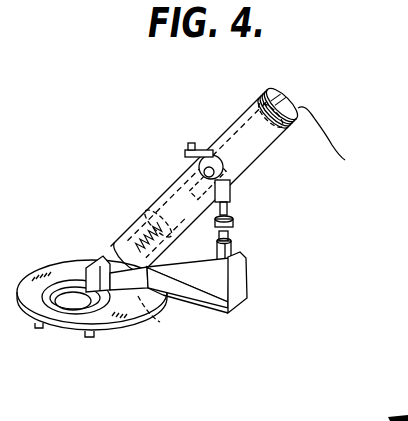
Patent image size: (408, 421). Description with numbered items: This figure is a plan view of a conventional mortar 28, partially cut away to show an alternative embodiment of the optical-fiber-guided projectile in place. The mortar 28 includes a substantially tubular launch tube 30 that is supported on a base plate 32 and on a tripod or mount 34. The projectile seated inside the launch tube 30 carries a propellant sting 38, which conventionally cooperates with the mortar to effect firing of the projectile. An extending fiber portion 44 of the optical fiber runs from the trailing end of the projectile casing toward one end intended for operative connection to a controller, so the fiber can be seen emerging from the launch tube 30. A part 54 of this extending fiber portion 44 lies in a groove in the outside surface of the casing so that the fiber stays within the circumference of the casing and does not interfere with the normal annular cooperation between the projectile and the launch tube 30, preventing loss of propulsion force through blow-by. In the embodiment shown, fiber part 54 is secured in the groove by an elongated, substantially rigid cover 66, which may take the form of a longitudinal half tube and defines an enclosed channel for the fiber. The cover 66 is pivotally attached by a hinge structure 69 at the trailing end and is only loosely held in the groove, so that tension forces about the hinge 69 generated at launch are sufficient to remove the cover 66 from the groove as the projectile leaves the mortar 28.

The mortar 28 is at (161, 195).
The launch tube 30 is at (245, 111).
The cover 66 is at (274, 144).
The fiber part 54 is at (244, 171).
The extending fiber portion 44 is at (336, 143).
The base plate 32 is at (42, 265).
The propellant sting 38 is at (124, 250).
The hinge structure 69 is at (160, 322).
The mount 34 is at (247, 277).